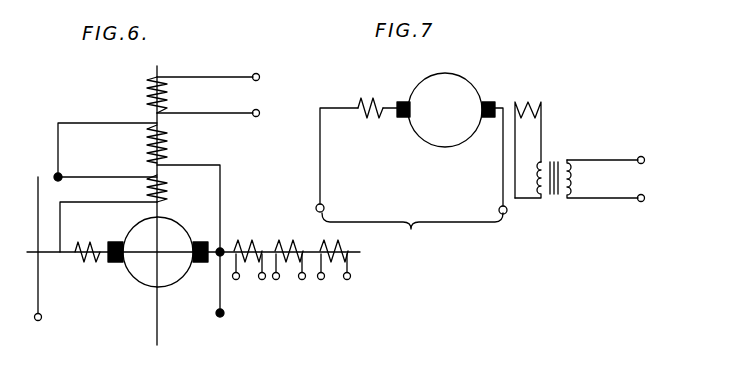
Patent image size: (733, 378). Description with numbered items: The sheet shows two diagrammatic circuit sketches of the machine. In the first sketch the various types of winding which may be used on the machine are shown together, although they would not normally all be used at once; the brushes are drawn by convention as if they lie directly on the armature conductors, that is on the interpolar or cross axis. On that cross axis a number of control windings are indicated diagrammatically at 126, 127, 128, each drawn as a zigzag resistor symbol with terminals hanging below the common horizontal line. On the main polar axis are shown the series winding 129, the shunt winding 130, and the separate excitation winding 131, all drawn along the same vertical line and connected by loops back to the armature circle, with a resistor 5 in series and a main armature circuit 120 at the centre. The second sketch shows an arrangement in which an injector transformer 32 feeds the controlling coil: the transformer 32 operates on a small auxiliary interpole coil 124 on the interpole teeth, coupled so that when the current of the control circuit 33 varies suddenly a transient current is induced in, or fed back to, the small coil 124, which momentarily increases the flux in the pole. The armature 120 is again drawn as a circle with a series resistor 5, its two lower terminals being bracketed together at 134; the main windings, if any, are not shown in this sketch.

In FIG. 6, the resistor 5 is at (79, 265).
In FIG. 7, the resistor 5 is at (370, 122).
In FIG. 6, the motor 120 is at (158, 252).
In FIG. 7, the motor 120 is at (446, 110).
In FIG. 7, the auxiliary interpole coil 124 is at (545, 147).
In FIG. 6, the control winding 126 is at (248, 270).
In FIG. 6, the control winding 127 is at (289, 270).
In FIG. 6, the control winding 128 is at (334, 270).
In FIG. 6, the series excitation winding 129 is at (142, 241).
In FIG. 6, the shunt excitation winding 130 is at (110, 152).
In FIG. 6, the separate excitation winding 131 is at (203, 95).
In FIG. 7, the terminals 134 is at (412, 230).
In FIG. 7, the injector transformer 32 is at (548, 158).
In FIG. 7, the control circuit 33 is at (645, 160).